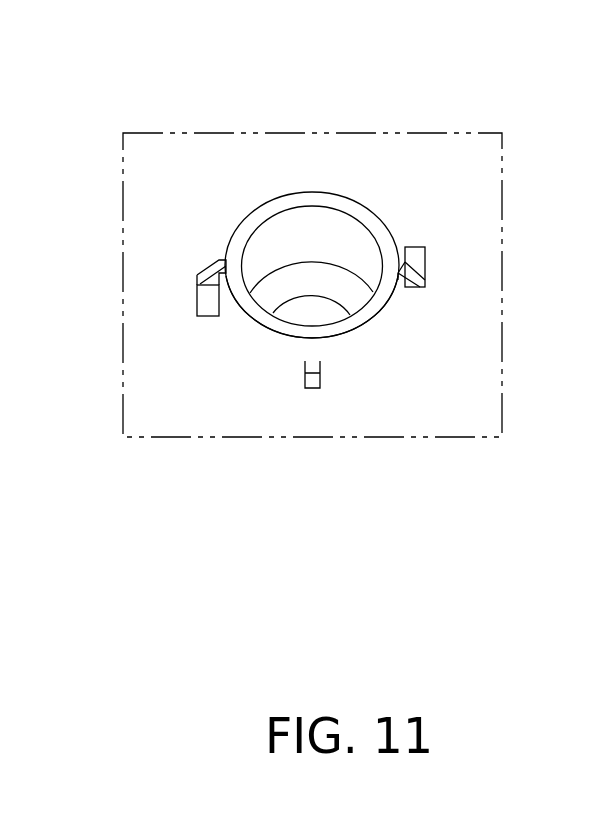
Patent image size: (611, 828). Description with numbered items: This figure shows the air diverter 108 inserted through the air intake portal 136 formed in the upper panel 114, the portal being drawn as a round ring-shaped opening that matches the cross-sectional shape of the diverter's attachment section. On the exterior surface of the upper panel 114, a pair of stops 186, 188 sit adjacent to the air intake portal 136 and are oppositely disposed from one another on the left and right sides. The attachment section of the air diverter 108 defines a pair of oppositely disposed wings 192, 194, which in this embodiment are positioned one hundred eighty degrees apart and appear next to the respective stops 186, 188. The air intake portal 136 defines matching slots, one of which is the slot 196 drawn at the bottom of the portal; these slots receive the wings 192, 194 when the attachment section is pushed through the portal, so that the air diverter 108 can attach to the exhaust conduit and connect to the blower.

The air diverter 108 is at (310, 197).
The air intake portal 136 is at (319, 266).
The upper panel 114 is at (473, 402).
The stop 186 is at (205, 304).
The stop 188 is at (415, 257).
The wing 192 is at (205, 276).
The wing 194 is at (417, 268).
The slot 196 is at (312, 388).